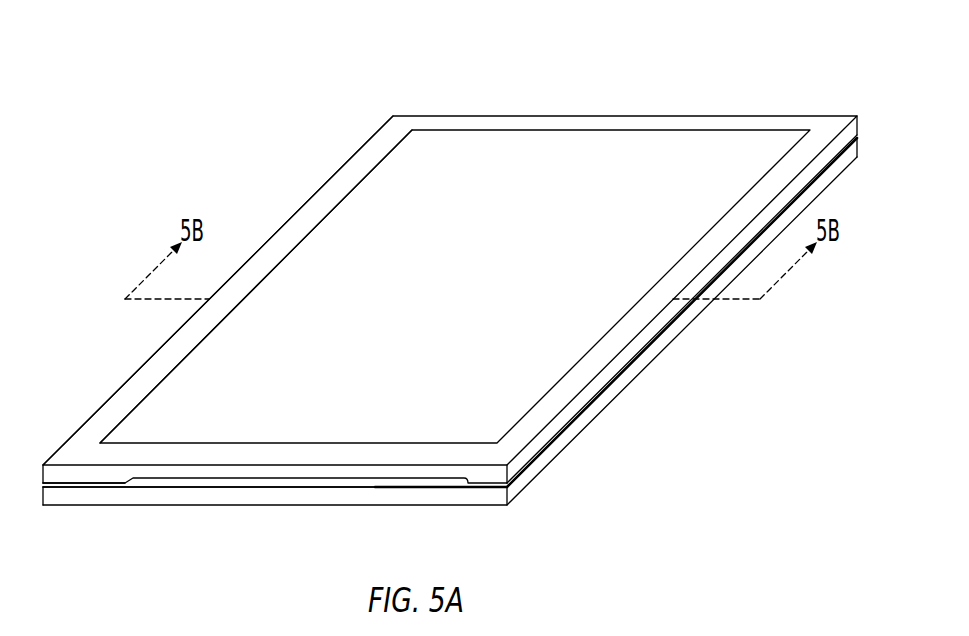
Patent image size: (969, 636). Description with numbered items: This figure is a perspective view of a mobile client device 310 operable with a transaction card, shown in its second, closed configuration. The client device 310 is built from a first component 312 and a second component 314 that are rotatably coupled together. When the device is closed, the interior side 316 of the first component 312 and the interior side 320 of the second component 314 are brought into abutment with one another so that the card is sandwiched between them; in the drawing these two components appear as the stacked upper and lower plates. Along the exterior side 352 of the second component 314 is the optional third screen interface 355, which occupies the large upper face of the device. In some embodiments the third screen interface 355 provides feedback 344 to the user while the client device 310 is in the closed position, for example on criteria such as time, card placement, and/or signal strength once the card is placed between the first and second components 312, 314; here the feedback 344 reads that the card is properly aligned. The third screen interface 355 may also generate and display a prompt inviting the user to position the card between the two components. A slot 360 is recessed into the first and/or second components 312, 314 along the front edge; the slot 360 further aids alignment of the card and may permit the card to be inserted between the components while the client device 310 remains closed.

The client device 310 is at (442, 62).
The first component 312 is at (670, 355).
The second component 314 is at (759, 108).
The interior side of the first component 316 is at (62, 485).
The interior side of the second component 320 is at (82, 487).
The feedback 344 is at (534, 242).
The exterior side of the second component 352 is at (305, 200).
The third screen interface 355 is at (580, 147).
The slot 360 is at (209, 486).